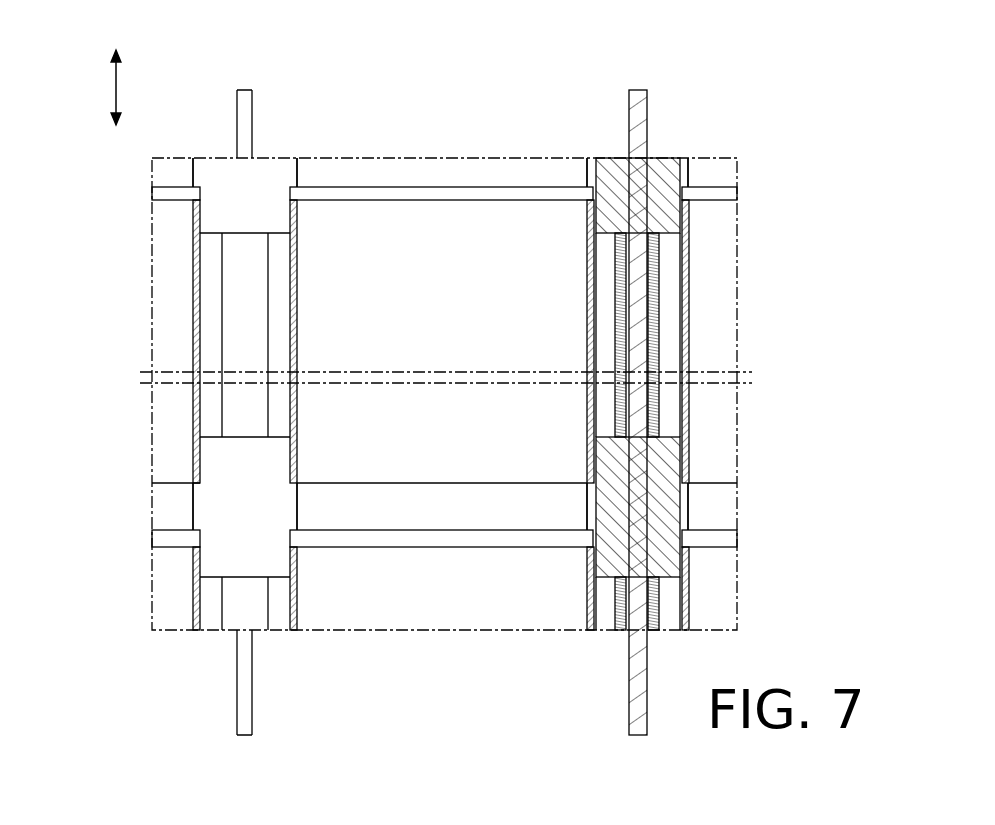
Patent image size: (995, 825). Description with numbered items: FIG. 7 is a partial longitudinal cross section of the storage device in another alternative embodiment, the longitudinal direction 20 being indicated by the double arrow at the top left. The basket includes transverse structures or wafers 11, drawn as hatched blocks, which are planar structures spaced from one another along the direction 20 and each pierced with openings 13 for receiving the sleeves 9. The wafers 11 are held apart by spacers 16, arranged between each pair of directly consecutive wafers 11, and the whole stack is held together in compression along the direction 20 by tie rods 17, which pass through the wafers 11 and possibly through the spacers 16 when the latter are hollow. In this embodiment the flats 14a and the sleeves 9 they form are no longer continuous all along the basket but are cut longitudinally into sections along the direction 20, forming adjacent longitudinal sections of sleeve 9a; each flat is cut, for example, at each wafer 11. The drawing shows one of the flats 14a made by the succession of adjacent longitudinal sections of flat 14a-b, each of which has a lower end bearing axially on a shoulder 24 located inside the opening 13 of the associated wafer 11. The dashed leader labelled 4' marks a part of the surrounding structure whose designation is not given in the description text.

The housing 4' is at (446, 352).
The sleeve 9 is at (492, 62).
The longitudinal section of sleeve 9a is at (380, 226).
The transverse structure 11 is at (690, 210).
The opening 13 is at (293, 218).
The flat 14a is at (507, 688).
The longitudinal section of flat 14a-b is at (397, 580).
The spacer 16 is at (238, 320).
The tie rod 17 is at (254, 120).
The direction 20 is at (113, 90).
The shoulder 24 is at (327, 483).